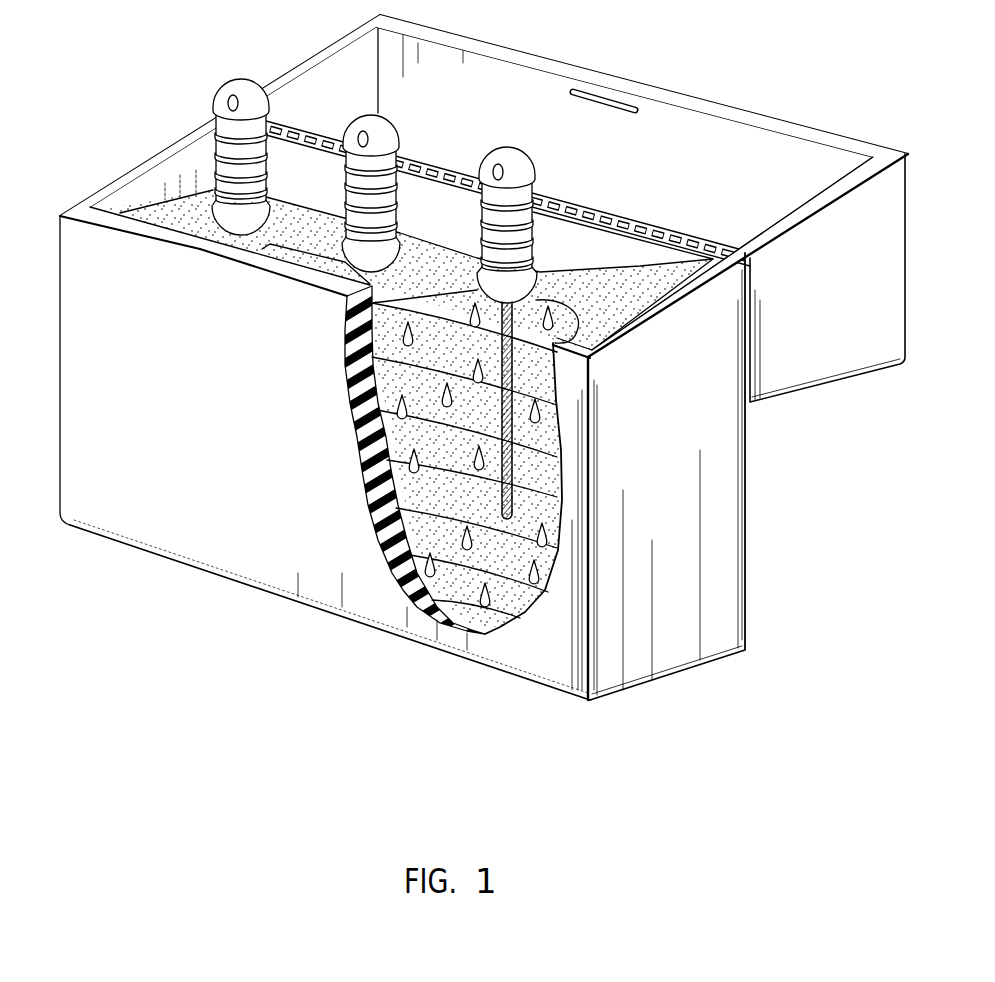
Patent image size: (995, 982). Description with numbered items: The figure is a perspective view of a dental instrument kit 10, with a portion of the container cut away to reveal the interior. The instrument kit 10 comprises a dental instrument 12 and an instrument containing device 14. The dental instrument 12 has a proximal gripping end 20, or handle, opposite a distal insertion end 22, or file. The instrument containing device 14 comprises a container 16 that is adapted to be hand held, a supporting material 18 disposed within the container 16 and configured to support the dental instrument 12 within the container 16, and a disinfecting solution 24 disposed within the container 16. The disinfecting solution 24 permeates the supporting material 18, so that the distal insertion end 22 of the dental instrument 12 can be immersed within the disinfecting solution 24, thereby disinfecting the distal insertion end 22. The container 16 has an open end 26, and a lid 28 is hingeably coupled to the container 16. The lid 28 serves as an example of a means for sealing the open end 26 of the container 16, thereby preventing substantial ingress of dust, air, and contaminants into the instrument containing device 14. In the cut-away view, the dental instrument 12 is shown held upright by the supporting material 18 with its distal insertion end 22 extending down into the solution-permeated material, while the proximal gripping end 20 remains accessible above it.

The instrument kit 10 is at (473, 389).
The dental instrument 12 is at (540, 148).
The instrument containing device 14 is at (476, 357).
The container 16 is at (722, 555).
The supporting material 18 is at (615, 310).
The proximal gripping end 20 is at (522, 174).
The distal insertion end 22 is at (510, 399).
The disinfecting solution 24 is at (487, 547).
The open end 26 is at (137, 173).
The lid 28 is at (832, 355).